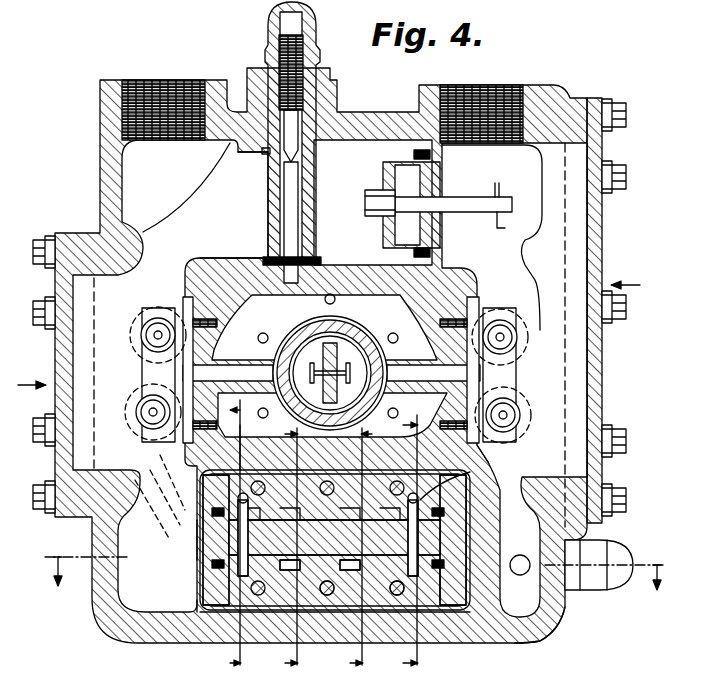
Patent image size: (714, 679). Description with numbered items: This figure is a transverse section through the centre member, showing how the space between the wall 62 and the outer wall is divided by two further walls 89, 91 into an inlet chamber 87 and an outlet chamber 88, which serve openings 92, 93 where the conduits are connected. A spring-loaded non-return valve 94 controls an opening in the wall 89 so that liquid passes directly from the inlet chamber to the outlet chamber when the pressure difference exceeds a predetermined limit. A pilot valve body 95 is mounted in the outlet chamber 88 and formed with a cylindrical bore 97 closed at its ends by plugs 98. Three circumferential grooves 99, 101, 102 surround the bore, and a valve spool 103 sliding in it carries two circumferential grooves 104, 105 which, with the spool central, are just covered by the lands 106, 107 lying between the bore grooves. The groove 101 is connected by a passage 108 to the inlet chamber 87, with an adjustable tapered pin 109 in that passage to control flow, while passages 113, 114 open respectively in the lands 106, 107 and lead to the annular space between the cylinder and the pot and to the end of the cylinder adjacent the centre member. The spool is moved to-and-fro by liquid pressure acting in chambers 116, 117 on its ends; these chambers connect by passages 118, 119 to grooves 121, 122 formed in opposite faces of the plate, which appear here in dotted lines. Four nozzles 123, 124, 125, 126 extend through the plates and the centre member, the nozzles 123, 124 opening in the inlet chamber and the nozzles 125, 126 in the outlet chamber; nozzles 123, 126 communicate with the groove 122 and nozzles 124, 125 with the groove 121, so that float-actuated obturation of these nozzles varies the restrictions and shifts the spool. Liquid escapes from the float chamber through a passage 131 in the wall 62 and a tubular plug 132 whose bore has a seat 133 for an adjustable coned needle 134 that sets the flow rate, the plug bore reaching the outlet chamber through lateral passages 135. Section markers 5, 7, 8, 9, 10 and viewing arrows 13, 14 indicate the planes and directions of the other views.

The section line 5- 5 is at (354, 584).
The section line 7- 7 is at (285, 550).
The section line 8- 8 is at (358, 550).
The section line 9- 9 is at (233, 538).
The section line 10- 10 is at (405, 539).
The view arrow 13 is at (29, 375).
The view arrow 14 is at (637, 274).
The wall 62 is at (207, 266).
The inlet chamber 87 is at (535, 192).
The outlet chamber 88 is at (172, 217).
The wall 89 is at (412, 153).
The wall 91 is at (505, 642).
The opening 92 is at (510, 90).
The opening 93 is at (185, 84).
The spring-loaded non-return valve 94 is at (383, 238).
The pilot valve body 95 is at (223, 600).
The cylindrical bore 97 is at (270, 522).
The plug 98 is at (465, 555).
The circumferential groove 99 is at (240, 626).
The circumferential groove 101 is at (352, 572).
The circumferential groove 102 is at (425, 600).
The valve spool 103 is at (218, 596).
The circumferential groove 104 is at (330, 560).
The circumferential groove 105 is at (398, 596).
The land 106 is at (290, 572).
The land 107 is at (412, 578).
The passage 108 is at (330, 596).
The adjustable tapered pin 109 is at (569, 609).
The passage 113 is at (245, 578).
The passage 114 is at (484, 452).
The chamber 116 is at (217, 543).
The chamber 117 is at (460, 552).
The passage 118 is at (456, 481).
The passage 119 is at (270, 520).
The groove 121 is at (202, 521).
The groove 122 is at (160, 497).
The nozzle 123 is at (500, 330).
The nozzle 124 is at (515, 415).
The nozzle 125 is at (160, 325).
The nozzle 126 is at (148, 405).
The passage 131 is at (283, 282).
The tubular plug 132 is at (270, 205).
The seat 133 is at (312, 168).
The adjustable coned needle 134 is at (290, 130).
The lateral passage 135 is at (236, 152).